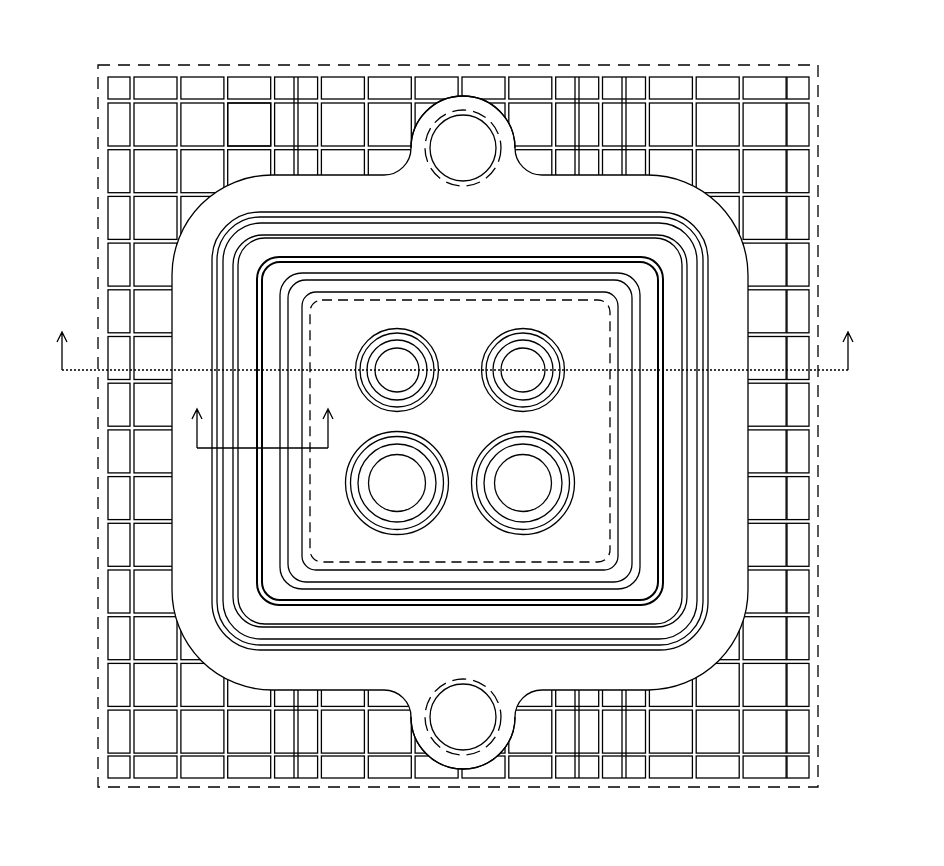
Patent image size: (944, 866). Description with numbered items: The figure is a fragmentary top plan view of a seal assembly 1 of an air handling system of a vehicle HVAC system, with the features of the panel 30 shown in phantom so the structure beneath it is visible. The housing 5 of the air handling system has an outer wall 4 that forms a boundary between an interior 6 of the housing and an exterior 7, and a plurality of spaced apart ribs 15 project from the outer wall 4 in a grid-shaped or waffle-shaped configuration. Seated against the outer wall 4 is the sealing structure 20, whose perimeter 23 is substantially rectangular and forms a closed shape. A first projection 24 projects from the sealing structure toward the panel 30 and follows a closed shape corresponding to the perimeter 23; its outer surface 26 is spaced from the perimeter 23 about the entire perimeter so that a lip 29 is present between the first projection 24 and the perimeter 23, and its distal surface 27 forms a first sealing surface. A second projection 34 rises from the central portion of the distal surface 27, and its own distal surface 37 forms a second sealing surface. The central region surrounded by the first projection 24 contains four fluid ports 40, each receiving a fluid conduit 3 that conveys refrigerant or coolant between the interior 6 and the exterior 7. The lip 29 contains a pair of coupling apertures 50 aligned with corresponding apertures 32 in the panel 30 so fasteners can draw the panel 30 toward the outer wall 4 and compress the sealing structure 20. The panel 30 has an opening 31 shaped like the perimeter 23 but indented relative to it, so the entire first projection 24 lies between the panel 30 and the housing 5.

The seal assembly 1 is at (108, 62).
The fluid conduit 3 is at (497, 366).
The outer wall 4 is at (166, 85).
The housing 5 is at (458, 396).
The ribs 15 is at (272, 77).
The sealing structure 20 is at (723, 232).
The perimeter 23 is at (750, 458).
The first projection 24 is at (692, 313).
The outer surface 26 is at (698, 523).
The distal surface 27 is at (556, 431).
The lip 29 is at (427, 120).
The panel 30 is at (668, 787).
The opening 31 is at (492, 563).
The aperture 32 is at (463, 112).
The second projection 34 is at (670, 292).
The distal surface 37 is at (573, 413).
The fluid ports 40 is at (493, 347).
The coupling apertures 50 is at (453, 158).
The interior 6 is at (454, 333).
The exterior 7 is at (262, 411).